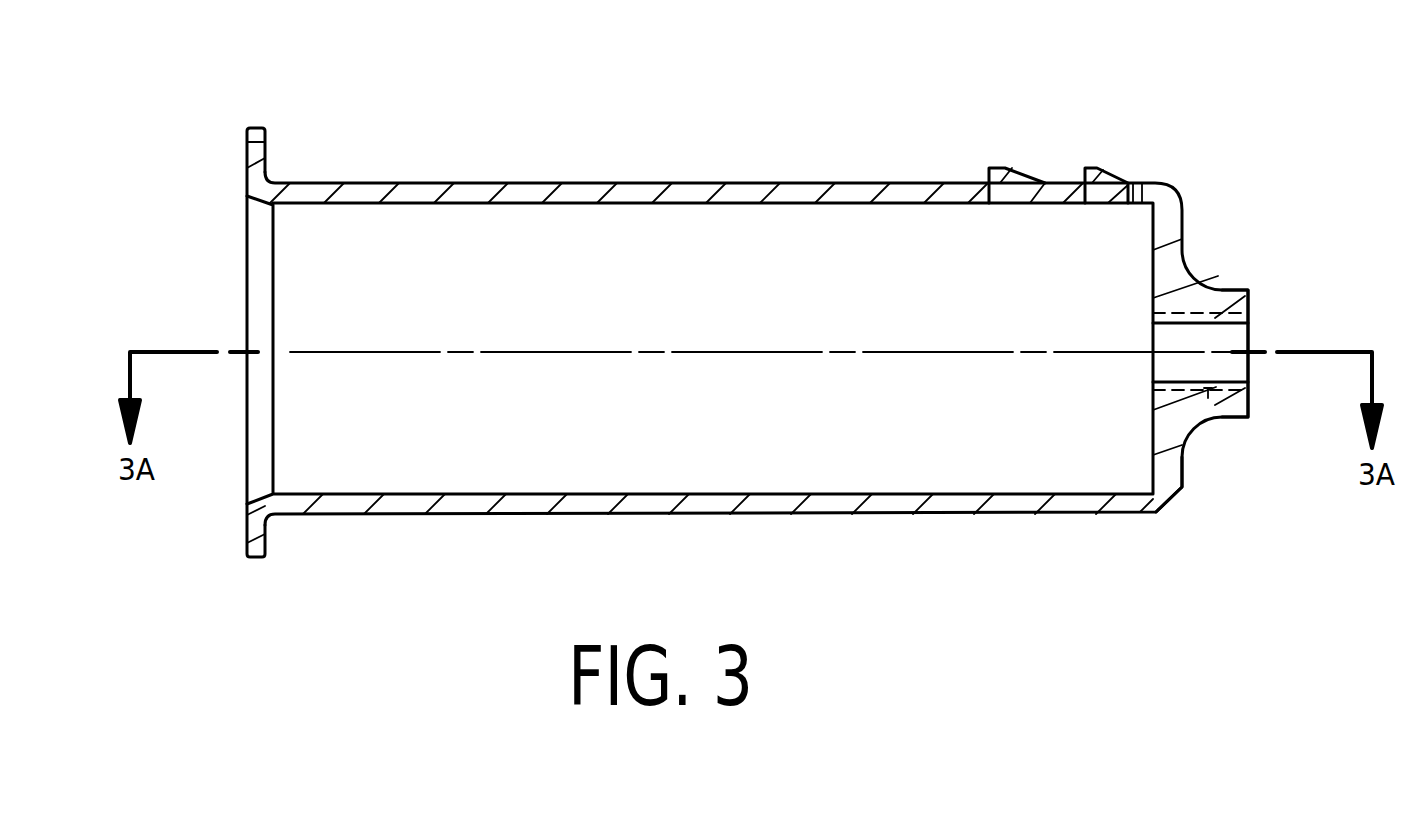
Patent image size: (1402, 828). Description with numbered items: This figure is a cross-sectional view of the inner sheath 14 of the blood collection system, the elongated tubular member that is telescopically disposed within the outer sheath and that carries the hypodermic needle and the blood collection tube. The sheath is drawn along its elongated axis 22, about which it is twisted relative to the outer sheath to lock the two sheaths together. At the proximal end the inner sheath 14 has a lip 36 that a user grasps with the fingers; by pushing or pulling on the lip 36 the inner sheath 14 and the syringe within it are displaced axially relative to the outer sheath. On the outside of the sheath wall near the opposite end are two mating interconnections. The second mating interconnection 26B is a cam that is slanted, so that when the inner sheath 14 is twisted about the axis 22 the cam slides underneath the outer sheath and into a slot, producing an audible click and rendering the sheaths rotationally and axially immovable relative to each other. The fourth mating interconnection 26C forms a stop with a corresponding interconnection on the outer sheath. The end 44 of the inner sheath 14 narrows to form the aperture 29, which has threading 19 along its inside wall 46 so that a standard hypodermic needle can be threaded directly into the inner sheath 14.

The inner sheath 14 is at (665, 515).
The lip 36 is at (266, 157).
The elongated axis 22 is at (648, 353).
The second mating interconnection 26B is at (1119, 118).
The fourth mating interconnection 26C is at (1024, 118).
The inside wall 46 is at (1217, 303).
The aperture 29 is at (1202, 345).
The threading 19 is at (1210, 403).
The end 44 is at (1228, 483).